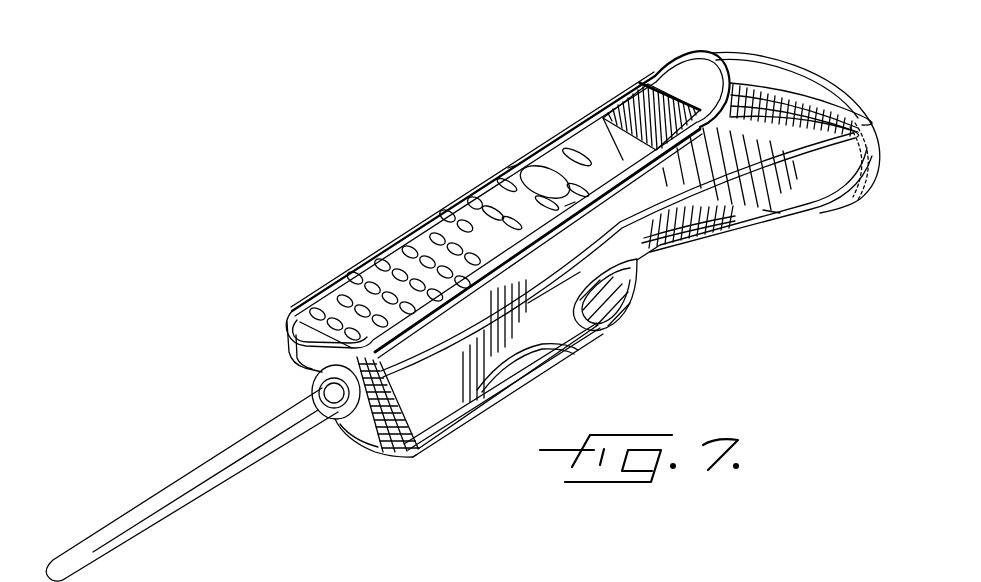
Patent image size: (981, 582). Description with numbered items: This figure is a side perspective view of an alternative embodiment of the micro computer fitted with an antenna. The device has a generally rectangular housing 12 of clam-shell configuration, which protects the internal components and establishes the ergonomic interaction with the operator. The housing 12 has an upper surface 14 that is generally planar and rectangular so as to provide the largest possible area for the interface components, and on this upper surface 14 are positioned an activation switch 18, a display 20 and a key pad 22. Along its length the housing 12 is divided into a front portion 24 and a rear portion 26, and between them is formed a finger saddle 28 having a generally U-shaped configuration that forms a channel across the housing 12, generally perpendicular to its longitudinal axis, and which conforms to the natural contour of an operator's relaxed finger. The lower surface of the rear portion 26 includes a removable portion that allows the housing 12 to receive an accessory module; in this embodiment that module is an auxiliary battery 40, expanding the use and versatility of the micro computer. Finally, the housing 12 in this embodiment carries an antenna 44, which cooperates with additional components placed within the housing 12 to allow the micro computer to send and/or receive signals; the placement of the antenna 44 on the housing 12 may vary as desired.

The housing 12 is at (814, 71).
The upper surface 14 is at (549, 148).
The activation switch 18 is at (537, 179).
The display 20 is at (605, 108).
The key pad 22 is at (356, 275).
The front portion 24 is at (860, 190).
The rear portion 26 is at (366, 440).
The finger saddle 28 is at (662, 296).
The auxiliary battery 40 is at (462, 421).
The antenna 44 is at (100, 530).